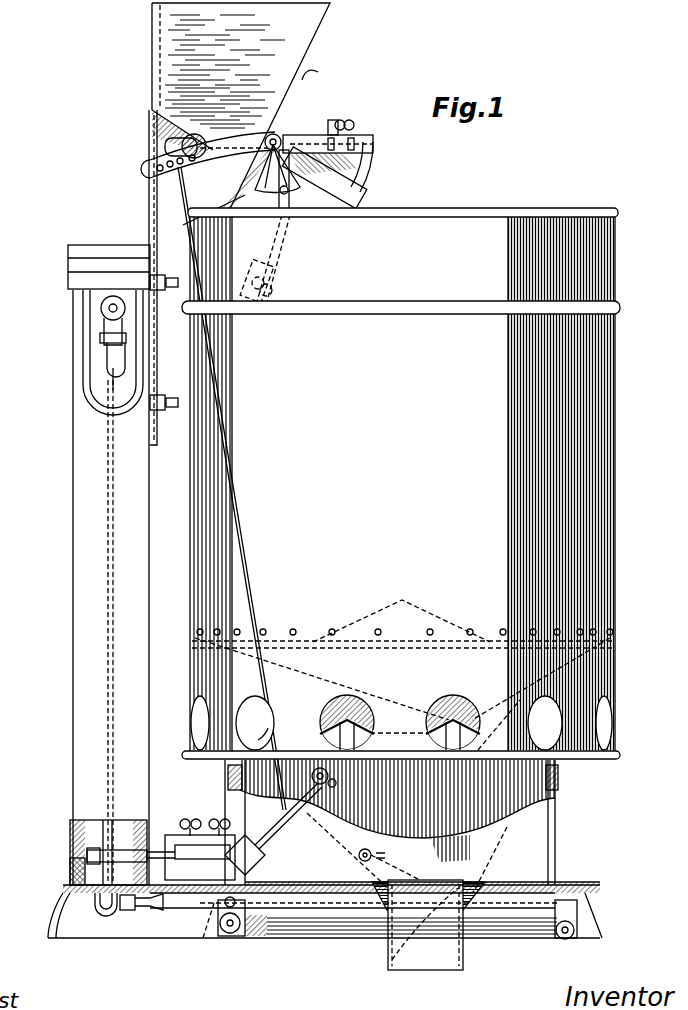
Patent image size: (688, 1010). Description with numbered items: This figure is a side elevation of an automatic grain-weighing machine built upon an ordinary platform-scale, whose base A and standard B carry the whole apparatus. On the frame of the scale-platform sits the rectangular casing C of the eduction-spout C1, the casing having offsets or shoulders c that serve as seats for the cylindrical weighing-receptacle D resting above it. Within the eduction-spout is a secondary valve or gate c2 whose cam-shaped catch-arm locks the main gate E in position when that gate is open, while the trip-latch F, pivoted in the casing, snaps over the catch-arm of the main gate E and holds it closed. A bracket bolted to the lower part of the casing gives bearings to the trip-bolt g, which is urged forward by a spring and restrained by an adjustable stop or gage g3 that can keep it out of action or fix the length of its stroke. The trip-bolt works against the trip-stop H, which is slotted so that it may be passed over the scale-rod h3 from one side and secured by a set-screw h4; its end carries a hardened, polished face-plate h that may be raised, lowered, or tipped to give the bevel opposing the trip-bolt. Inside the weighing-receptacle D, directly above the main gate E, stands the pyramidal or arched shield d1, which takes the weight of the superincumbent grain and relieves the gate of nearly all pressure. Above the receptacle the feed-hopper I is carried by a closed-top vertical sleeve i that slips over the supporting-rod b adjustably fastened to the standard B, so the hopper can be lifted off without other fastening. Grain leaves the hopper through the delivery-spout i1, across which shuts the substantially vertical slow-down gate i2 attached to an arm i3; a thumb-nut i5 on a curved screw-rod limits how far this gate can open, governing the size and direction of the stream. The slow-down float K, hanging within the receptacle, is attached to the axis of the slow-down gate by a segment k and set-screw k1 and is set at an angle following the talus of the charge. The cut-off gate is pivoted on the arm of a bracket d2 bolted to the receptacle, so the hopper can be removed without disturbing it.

The feed-hopper I is at (241, 108).
The supporting-rod b is at (155, 277).
The standard B is at (123, 497).
The bracket d2 is at (220, 471).
The arm i3 is at (188, 143).
The slow-down gate i2 is at (330, 144).
The delivery-spout i1 is at (324, 178).
The vertical sleeve i is at (369, 167).
The thumb-nut i5 is at (330, 124).
The segment k is at (294, 182).
The set-screw k1 is at (270, 222).
The slow-down float K is at (296, 290).
The weighing-receptacle D is at (401, 483).
The shield d1 is at (401, 620).
The trip-latch F is at (255, 723).
The main gate E is at (470, 740).
The casing C is at (428, 790).
The offsets or shoulders c is at (558, 772).
The secondary valve or gate c2 is at (430, 862).
The eduction-spout C1 is at (425, 938).
The base A is at (307, 861).
The trip-stop H is at (108, 852).
The scale-rod h3 is at (106, 824).
The set-screw h4 is at (70, 872).
The face-plate h is at (150, 860).
The stop or gage g3 is at (188, 867).
The trip-bolt g is at (215, 849).